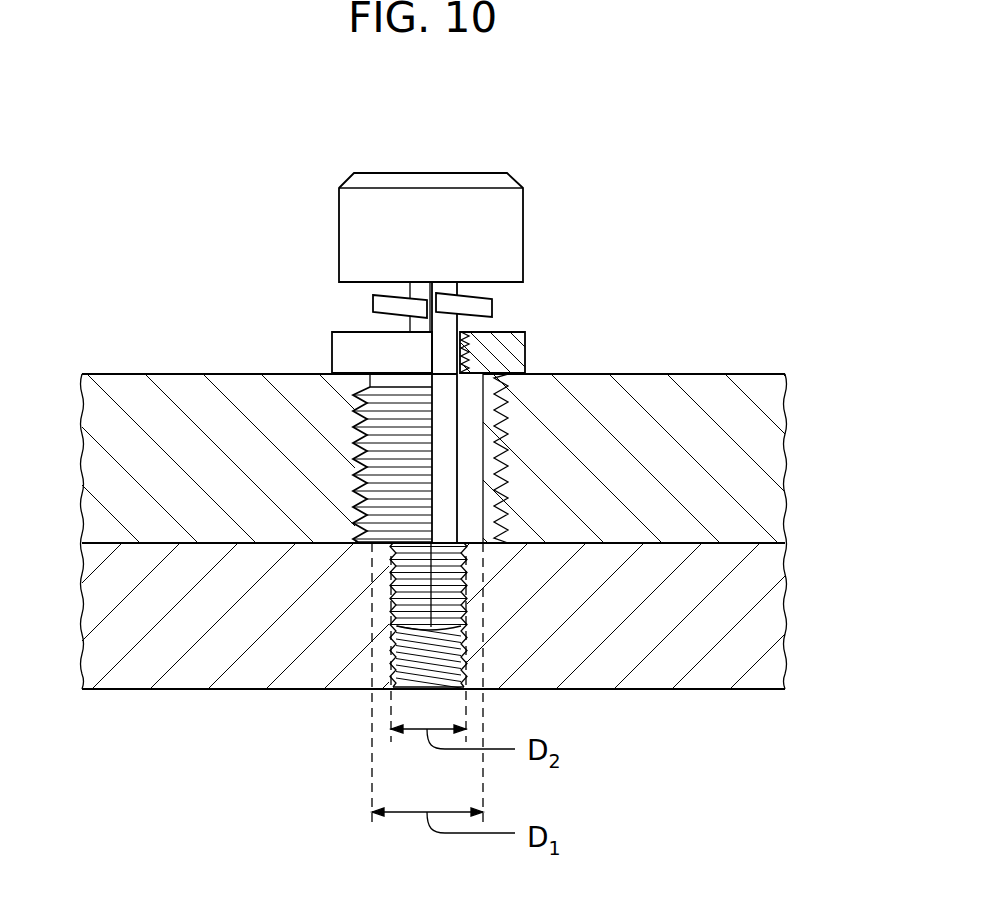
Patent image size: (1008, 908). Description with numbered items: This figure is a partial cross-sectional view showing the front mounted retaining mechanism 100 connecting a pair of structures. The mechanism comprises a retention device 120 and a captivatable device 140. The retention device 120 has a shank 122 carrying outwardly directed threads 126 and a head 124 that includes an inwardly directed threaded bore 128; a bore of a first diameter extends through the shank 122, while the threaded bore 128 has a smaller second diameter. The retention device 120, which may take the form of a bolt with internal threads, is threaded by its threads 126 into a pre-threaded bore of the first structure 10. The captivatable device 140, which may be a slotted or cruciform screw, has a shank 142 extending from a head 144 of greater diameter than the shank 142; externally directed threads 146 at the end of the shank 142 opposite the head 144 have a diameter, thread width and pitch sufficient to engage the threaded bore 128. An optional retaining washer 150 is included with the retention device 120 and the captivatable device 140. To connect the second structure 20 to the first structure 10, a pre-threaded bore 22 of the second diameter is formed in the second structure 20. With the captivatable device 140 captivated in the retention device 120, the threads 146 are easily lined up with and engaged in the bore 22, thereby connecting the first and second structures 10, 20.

The first structure 10 is at (763, 438).
The second structure 20 is at (763, 627).
The pre-threaded bore 22 is at (497, 688).
The front mounted retaining mechanism 100 is at (297, 163).
The retention device 120 is at (345, 354).
The shank 122 is at (238, 412).
The head 124 is at (372, 343).
The outwardly directed threads 126 is at (353, 422).
The threaded bore 128 is at (470, 362).
The captivatable device 140 is at (490, 184).
The shank 142 is at (443, 427).
The head 144 is at (508, 225).
The externally directed threads 146 is at (395, 598).
The retaining washer 150 is at (490, 310).